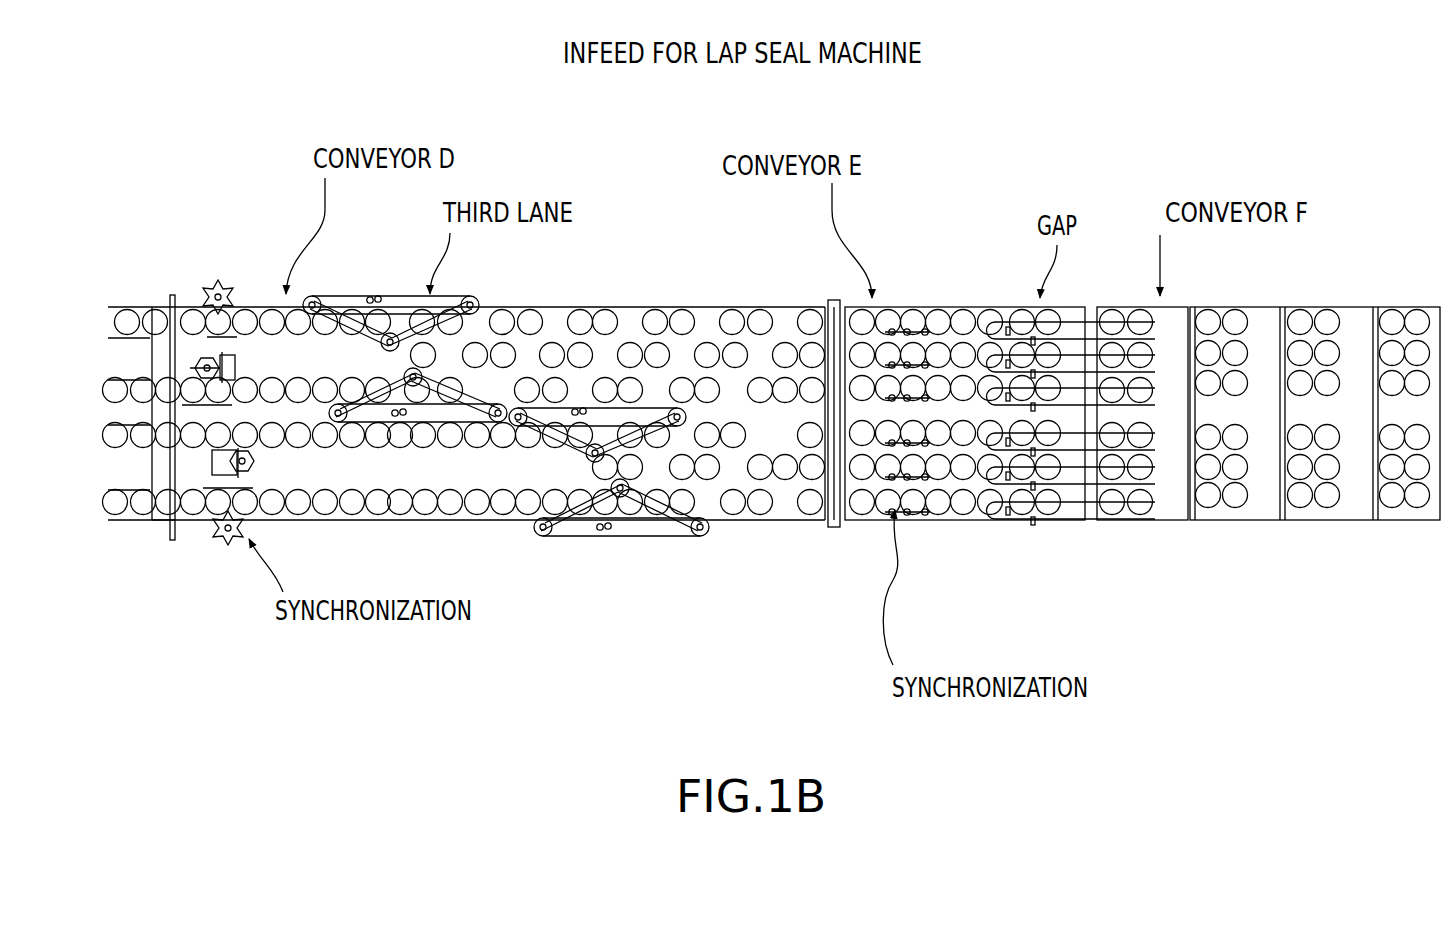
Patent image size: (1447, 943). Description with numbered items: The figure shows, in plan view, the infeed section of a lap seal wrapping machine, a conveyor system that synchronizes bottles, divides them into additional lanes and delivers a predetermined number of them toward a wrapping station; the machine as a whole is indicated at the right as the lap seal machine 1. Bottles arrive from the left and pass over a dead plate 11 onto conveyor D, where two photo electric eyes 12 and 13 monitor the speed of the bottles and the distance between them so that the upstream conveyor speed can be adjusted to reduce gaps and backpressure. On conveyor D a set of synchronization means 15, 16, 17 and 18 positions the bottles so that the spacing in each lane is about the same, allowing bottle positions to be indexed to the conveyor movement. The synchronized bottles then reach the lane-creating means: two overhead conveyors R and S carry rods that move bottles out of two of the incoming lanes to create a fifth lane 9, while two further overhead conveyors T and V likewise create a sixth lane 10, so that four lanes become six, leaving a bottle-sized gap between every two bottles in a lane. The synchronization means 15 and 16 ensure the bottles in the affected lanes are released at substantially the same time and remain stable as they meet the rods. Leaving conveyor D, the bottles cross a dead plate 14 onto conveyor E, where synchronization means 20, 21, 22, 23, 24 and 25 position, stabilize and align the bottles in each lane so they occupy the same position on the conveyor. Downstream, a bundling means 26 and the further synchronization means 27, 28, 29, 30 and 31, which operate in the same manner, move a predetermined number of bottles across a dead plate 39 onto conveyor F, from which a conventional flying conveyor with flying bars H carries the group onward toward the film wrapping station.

The lap seal machine infeed section 1 is at (1410, 296).
The fifth lane 9 is at (762, 470).
The sixth lane 10 is at (738, 353).
The dead plate 11 is at (173, 527).
The photo electric eye 12 is at (173, 294).
The photo electric eye 13 is at (163, 482).
The dead plate 14 is at (833, 529).
The synchronization means 15 is at (264, 530).
The synchronization means 16 is at (285, 457).
The synchronization means 17 is at (257, 362).
The synchronization means 18 is at (228, 278).
The synchronization means 20 is at (945, 503).
The synchronization means 21 is at (957, 470).
The synchronization means 22 is at (957, 436).
The synchronization means 23 is at (974, 328).
The synchronization means 24 is at (952, 380).
The synchronization means 25 is at (976, 350).
The bundling means 26 is at (1085, 512).
The synchronization means 27 is at (1085, 477).
The synchronization means 28 is at (1085, 443).
The synchronization means 29 is at (1085, 398).
The synchronization means 30 is at (1085, 365).
The synchronization means 31 is at (1085, 332).
The dead plate 39 is at (1079, 527).
The overhead conveyor R is at (628, 539).
The overhead conveyor S is at (605, 393).
The overhead conveyor T is at (490, 390).
The overhead conveyor V is at (360, 294).
The flying conveyor H is at (1202, 522).